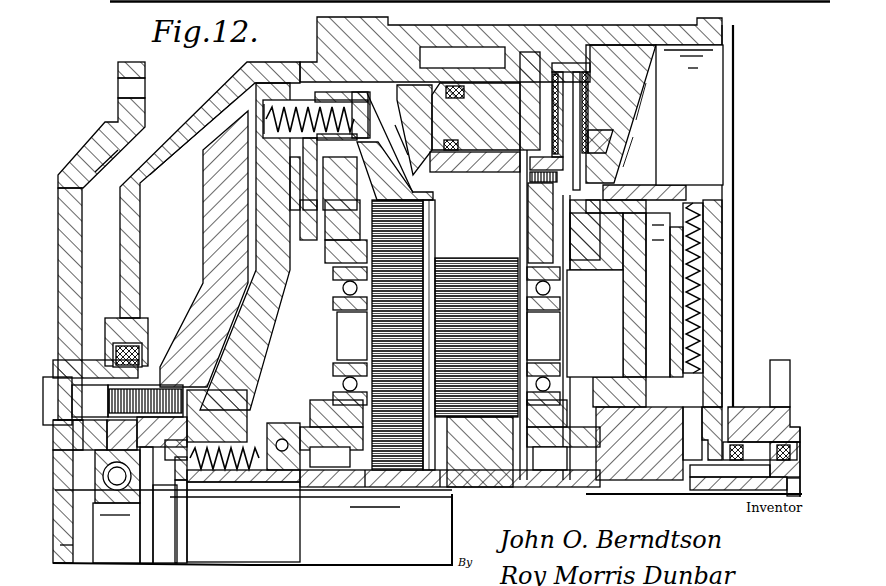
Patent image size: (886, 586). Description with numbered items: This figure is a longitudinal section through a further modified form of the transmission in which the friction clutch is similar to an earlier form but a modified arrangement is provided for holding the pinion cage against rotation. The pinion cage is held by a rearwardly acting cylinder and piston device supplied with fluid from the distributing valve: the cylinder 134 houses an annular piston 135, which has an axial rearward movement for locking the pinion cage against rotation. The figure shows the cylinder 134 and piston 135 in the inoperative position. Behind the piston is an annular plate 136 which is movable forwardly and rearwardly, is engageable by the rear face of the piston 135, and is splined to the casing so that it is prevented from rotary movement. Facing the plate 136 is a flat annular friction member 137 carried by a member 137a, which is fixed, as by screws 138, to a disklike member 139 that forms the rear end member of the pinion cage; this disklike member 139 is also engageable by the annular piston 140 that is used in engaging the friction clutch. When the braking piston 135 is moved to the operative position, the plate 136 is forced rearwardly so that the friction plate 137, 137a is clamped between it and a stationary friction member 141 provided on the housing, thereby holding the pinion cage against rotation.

The cylinder 134 is at (477, 80).
The piston 135 is at (468, 140).
The annular plate 136 is at (532, 60).
The flat annular friction member 137 is at (540, 150).
The member carrying the friction member 137a is at (560, 72).
The screws 138 is at (563, 177).
The disklike member 139 is at (545, 227).
The annular piston 140 is at (619, 253).
The stationary friction member 141 is at (618, 158).